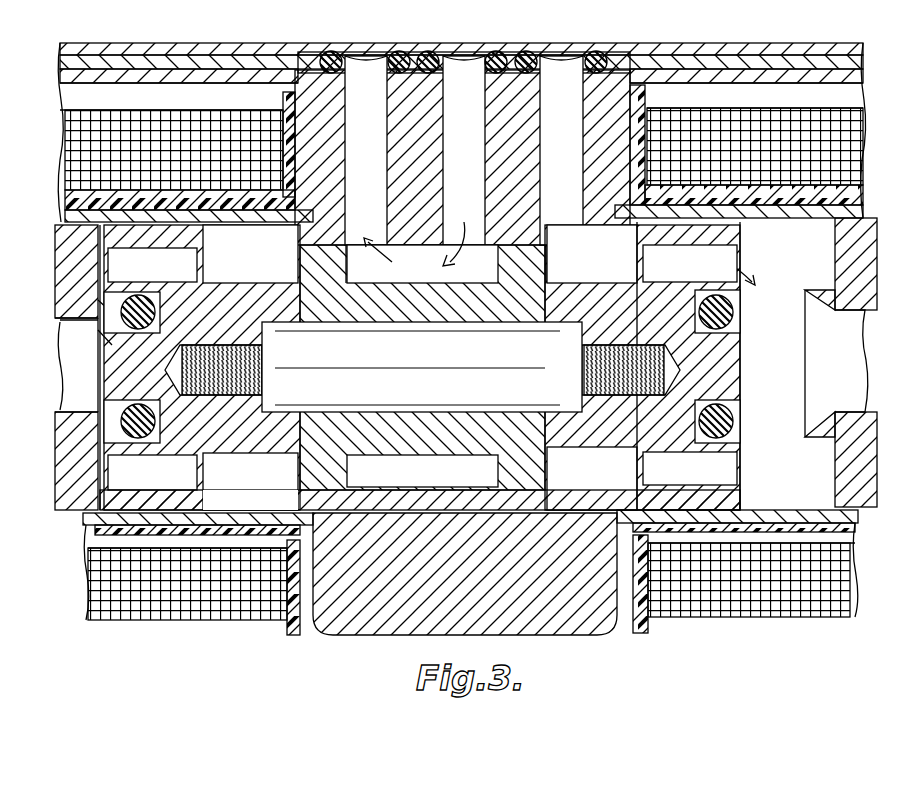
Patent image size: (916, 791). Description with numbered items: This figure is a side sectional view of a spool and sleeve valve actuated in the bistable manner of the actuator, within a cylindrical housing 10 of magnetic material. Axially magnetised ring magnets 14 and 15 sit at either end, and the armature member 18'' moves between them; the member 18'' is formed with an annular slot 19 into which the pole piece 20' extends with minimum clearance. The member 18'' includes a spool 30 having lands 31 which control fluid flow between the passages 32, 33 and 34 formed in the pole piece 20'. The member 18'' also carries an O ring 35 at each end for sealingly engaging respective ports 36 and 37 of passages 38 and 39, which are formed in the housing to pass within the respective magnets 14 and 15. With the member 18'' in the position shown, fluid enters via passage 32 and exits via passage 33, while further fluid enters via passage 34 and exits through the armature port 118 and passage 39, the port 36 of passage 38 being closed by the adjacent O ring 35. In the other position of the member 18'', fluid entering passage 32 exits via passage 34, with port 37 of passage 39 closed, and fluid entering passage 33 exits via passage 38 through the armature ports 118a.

The cylindrical housing 10 is at (710, 48).
The ring magnet 14 is at (63, 482).
The ring magnet 15 is at (866, 447).
The member 18'' is at (675, 367).
The annular slot 19 is at (254, 283).
The pole piece 20' is at (462, 593).
The spool 30 is at (420, 283).
The lands 31 is at (346, 276).
The passage 32 is at (478, 166).
The passage 33 is at (380, 166).
The passage 34 is at (576, 166).
The O ring 35 is at (147, 440).
The port 36 is at (108, 335).
The port 37 is at (812, 303).
The passage 38 is at (86, 410).
The passage 39 is at (866, 335).
The armature port 118 is at (738, 246).
The armature ports 118a is at (205, 252).